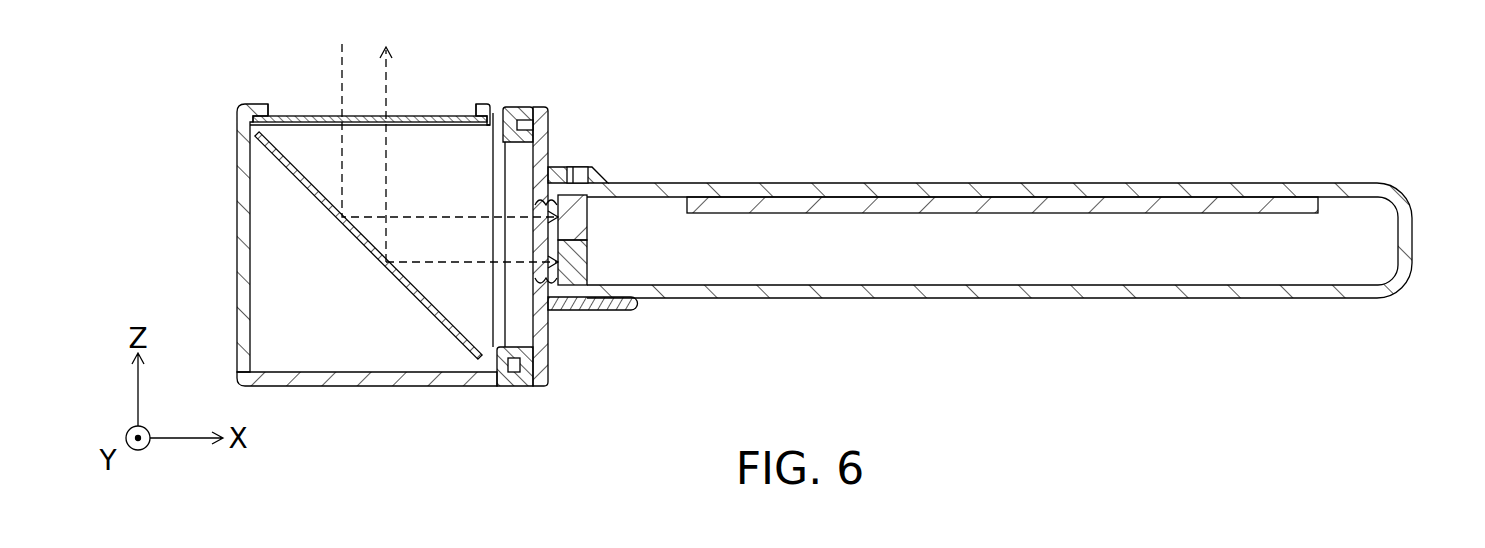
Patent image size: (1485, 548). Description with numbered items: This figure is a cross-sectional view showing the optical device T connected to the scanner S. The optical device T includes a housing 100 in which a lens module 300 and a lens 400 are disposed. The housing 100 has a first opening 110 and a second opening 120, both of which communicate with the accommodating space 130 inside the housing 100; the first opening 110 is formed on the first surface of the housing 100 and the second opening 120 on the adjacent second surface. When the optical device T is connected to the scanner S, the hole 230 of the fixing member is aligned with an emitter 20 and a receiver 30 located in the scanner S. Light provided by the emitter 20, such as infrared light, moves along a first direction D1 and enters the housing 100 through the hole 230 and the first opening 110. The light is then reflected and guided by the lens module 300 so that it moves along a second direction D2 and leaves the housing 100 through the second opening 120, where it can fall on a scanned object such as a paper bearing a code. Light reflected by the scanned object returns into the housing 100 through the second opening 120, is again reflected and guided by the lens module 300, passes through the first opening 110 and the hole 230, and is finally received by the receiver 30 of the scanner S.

The housing 100 is at (245, 127).
The first opening 110 is at (500, 312).
The second opening 120 is at (292, 113).
The accommodating space 130 is at (283, 287).
The lens module 300 is at (284, 166).
The lens 400 is at (445, 117).
The emitter 20 is at (572, 263).
The receiver 30 is at (572, 215).
The hole 230 is at (588, 308).
The optical device T is at (239, 106).
The scanner S is at (1402, 285).
The first direction D1 is at (397, 415).
The second direction D2 is at (214, 209).